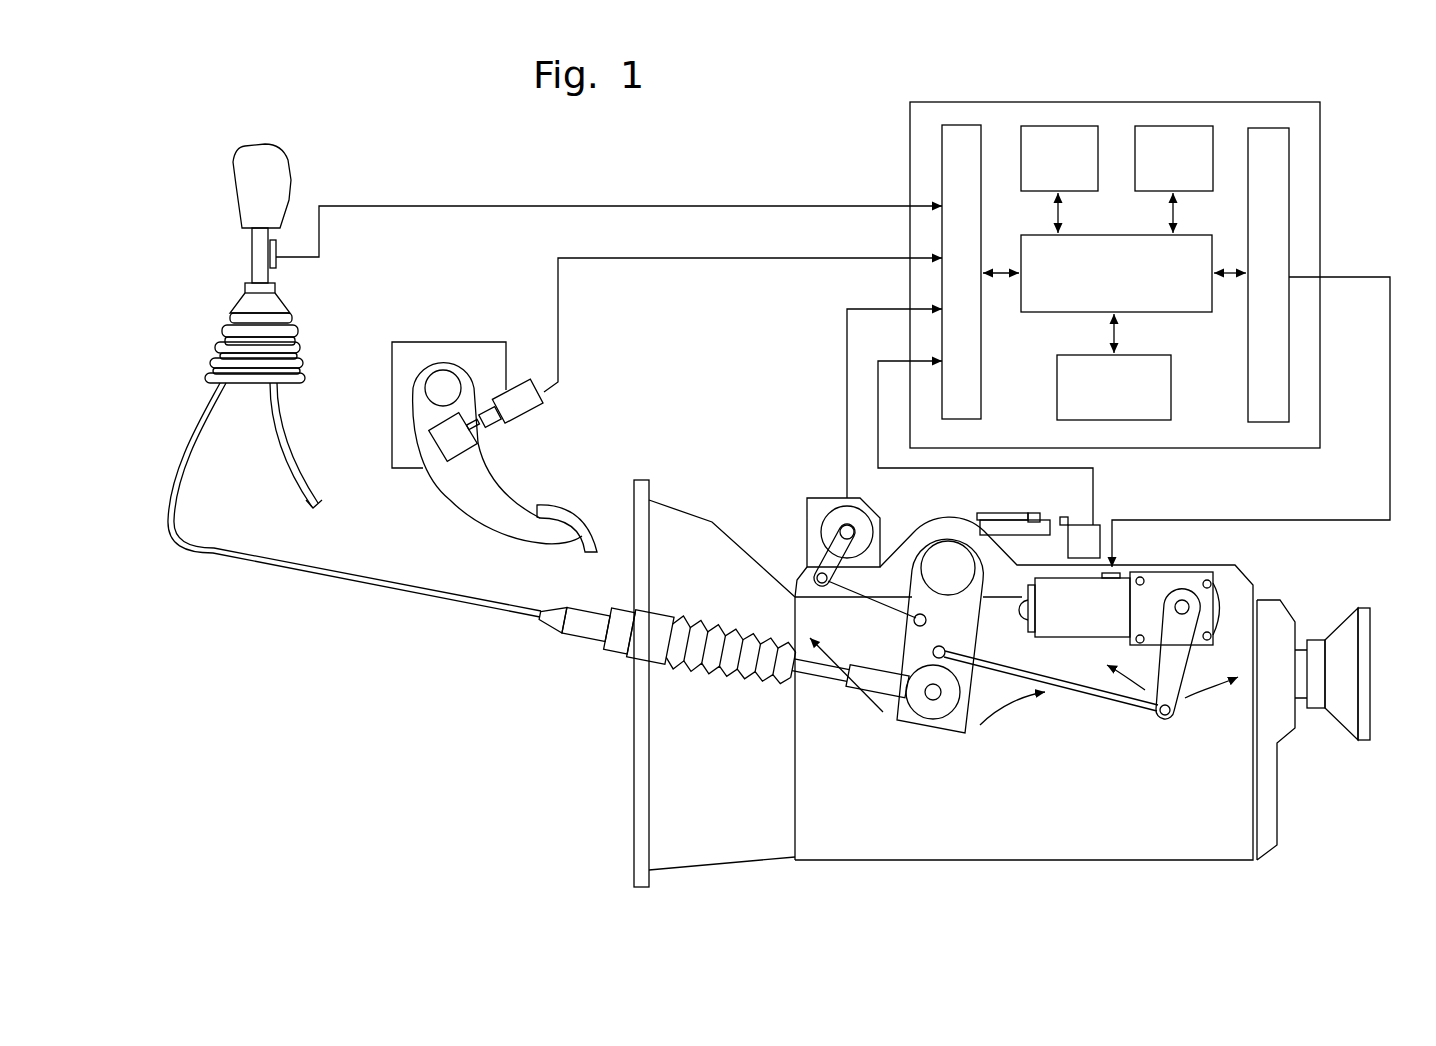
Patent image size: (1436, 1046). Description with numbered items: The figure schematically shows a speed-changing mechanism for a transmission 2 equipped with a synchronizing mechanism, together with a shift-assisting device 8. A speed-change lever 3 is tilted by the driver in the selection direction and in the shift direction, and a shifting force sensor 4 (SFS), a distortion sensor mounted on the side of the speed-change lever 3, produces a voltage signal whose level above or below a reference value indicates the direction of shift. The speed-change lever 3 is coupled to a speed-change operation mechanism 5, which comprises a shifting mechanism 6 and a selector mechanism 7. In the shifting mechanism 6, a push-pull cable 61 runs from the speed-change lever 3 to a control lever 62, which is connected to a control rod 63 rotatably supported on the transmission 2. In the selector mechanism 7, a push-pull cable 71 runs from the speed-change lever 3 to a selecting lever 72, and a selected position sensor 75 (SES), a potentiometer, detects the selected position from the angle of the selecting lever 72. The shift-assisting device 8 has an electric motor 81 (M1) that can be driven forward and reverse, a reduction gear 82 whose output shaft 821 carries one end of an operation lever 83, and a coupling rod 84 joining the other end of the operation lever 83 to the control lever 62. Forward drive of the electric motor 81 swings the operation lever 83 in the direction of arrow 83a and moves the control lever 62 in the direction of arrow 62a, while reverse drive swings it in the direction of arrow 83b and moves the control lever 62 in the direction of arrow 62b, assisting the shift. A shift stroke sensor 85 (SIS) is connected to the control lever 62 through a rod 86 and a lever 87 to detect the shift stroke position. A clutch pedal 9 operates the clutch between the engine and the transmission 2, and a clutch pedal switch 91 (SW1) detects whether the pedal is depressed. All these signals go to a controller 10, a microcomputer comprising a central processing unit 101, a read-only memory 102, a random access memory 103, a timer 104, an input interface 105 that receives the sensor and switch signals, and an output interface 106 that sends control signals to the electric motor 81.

The transmission 2 is at (1168, 848).
The speed-change lever 3 is at (291, 263).
The shifting force sensor 4 is at (276, 255).
The speed-change operation mechanism 5 is at (915, 792).
The shifting mechanism 6 is at (931, 657).
The selector mechanism 7 is at (1100, 485).
The shift-assisting device 8 is at (1171, 663).
The clutch pedal 9 is at (475, 527).
The controller 10 is at (1106, 244).
The push-pull cable 61 is at (473, 612).
The control lever 62 is at (945, 725).
The arrow 62a is at (858, 703).
The arrow 62b is at (1020, 713).
The control rod 63 is at (942, 560).
The push-pull cable 71 is at (303, 472).
The selecting lever 72 is at (1013, 535).
The selected position sensor 75 is at (1100, 525).
The electric motor 81 is at (1050, 625).
The reduction gear 82 is at (1157, 580).
The output shaft 821 is at (1182, 600).
The operation lever 83 is at (1177, 712).
The arrow 83a is at (1101, 668).
The arrow 83b is at (1219, 672).
The coupling rod 84 is at (1090, 697).
The shift stroke sensor 85 is at (845, 498).
The rod 86 is at (877, 603).
The lever 87 is at (817, 563).
The clutch pedal switch 91 is at (532, 413).
The central processing unit 101 is at (1188, 312).
The read-only memory 102 is at (1042, 126).
The random access memory 103 is at (1168, 126).
The timer 104 is at (1057, 395).
The input interface 105 is at (942, 193).
The output interface 106 is at (1289, 177).